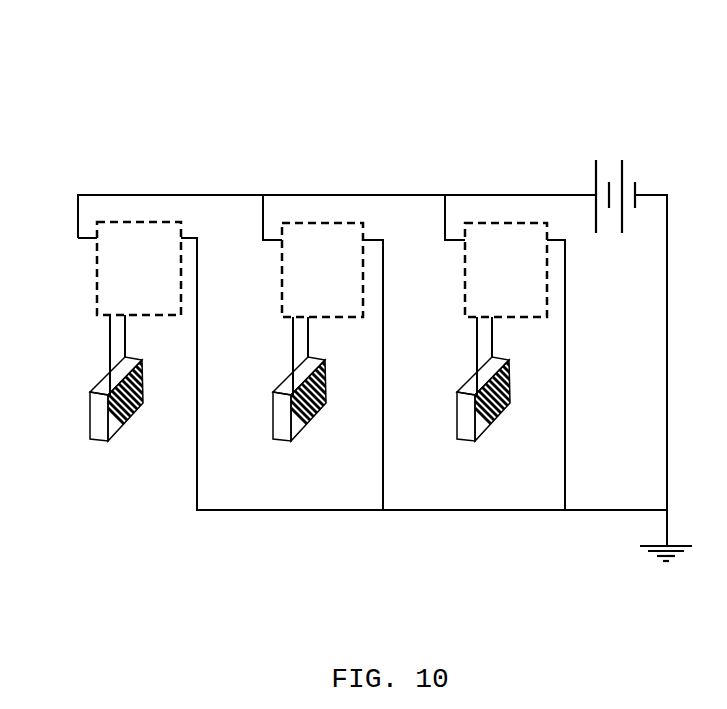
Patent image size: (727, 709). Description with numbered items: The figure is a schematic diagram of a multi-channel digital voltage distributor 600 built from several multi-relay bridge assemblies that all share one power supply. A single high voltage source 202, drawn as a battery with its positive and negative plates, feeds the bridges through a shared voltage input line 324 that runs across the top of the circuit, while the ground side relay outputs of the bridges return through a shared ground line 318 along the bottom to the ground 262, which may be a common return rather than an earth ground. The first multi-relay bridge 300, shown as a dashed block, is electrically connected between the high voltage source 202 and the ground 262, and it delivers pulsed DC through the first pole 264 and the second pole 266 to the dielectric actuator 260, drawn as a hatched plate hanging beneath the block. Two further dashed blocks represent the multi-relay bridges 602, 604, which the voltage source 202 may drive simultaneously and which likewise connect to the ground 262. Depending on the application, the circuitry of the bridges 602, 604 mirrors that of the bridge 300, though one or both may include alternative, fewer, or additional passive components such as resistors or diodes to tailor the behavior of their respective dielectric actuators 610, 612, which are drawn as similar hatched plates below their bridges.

The multi-channel digital voltage distributor 600 is at (138, 67).
The high voltage source 202 is at (608, 157).
The shared voltage input line 324 is at (100, 193).
The shared ground line 318 is at (262, 510).
The ground 262 is at (662, 553).
The multi-relay bridge 300 is at (97, 275).
The multi-relay bridge 602 is at (282, 278).
The multi-relay bridge 604 is at (465, 275).
The second pole 266 is at (110, 338).
The first pole 264 is at (127, 338).
The dielectric actuator 260 is at (99, 459).
The dielectric actuator 610 is at (282, 462).
The dielectric actuator 612 is at (466, 464).